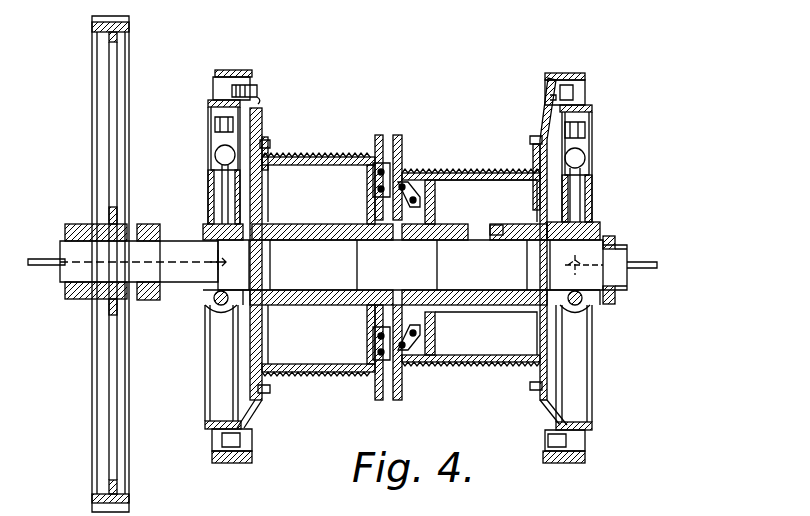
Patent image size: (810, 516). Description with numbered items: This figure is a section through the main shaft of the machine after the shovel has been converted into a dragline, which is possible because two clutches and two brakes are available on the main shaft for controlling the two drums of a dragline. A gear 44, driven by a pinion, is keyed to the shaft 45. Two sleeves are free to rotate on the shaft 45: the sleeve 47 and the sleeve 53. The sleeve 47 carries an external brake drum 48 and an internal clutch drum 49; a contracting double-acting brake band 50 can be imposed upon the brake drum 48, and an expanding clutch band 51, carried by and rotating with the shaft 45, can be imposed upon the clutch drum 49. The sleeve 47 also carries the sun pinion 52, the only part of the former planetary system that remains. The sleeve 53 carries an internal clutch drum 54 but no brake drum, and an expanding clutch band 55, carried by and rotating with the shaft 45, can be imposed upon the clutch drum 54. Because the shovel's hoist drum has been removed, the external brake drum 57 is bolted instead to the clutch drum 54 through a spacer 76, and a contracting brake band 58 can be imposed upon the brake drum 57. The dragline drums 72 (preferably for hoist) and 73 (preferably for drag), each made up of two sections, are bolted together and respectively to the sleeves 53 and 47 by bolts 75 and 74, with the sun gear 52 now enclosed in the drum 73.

The gear 44 is at (92, 125).
The shaft 45 is at (60, 252).
The sleeve 47 is at (465, 224).
The external brake drum 48 is at (588, 90).
The internal clutch drum 49 is at (592, 108).
The contracting double-acting brake band 50 is at (585, 76).
The expanding clutch band 51 is at (590, 124).
The sun pinion 52 is at (502, 225).
The sleeve 53 is at (292, 222).
The internal clutch drum 54 is at (208, 104).
The expanding clutch band 55 is at (215, 120).
The external brake drum 57 is at (213, 88).
The contracting brake band 58 is at (215, 72).
The dragline drum 72 is at (320, 157).
The dragline drum 73 is at (470, 173).
The bolts 74 is at (266, 142).
The bolts 75 is at (373, 190).
The spacer 76 is at (258, 92).